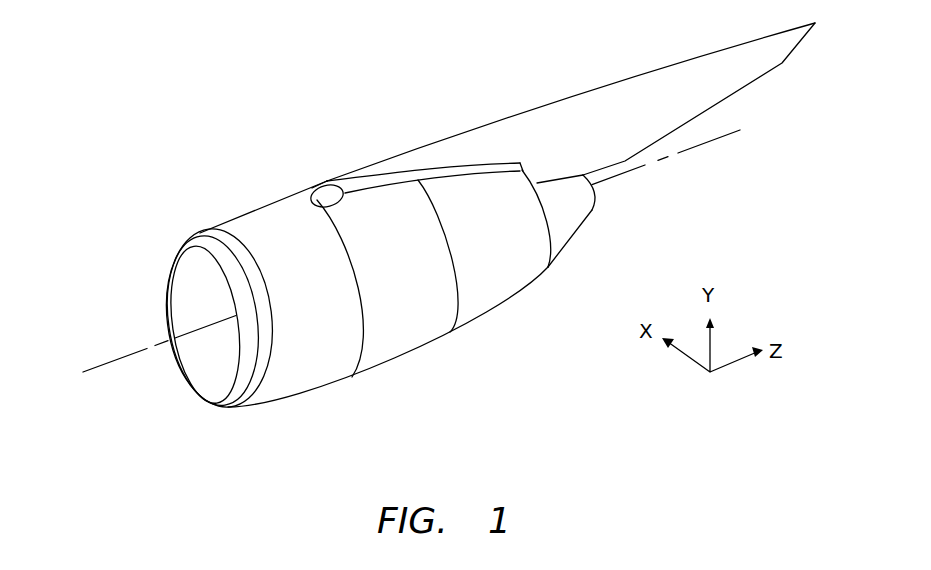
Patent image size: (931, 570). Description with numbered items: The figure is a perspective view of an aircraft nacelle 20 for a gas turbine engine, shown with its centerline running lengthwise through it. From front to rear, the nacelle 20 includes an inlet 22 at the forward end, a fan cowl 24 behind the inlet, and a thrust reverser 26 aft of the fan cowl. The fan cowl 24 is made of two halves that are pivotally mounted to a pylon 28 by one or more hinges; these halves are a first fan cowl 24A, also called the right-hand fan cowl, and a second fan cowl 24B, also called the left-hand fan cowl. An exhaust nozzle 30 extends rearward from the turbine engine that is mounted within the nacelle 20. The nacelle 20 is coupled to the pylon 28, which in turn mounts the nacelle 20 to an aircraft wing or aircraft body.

The nacelle 20 is at (203, 82).
The inlet 22 is at (222, 232).
The fan cowl 24 is at (374, 276).
The first fan cowl 24A is at (303, 190).
The second fan cowl 24B is at (380, 360).
The thrust reverser 26 is at (515, 285).
The pylon 28 is at (508, 133).
The exhaust nozzle 30 is at (580, 212).